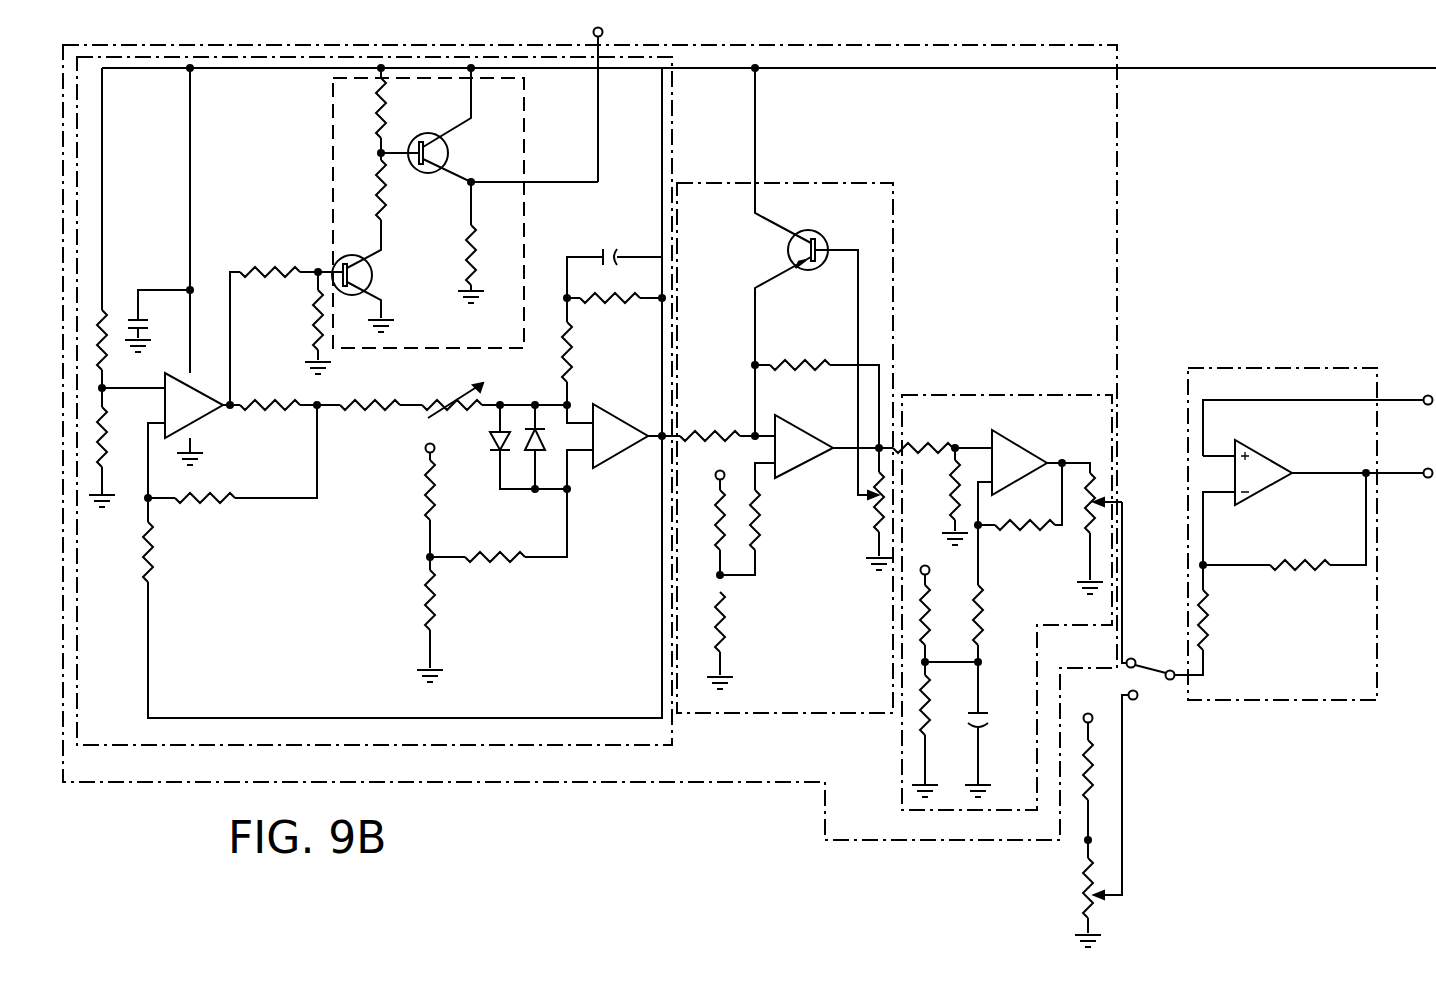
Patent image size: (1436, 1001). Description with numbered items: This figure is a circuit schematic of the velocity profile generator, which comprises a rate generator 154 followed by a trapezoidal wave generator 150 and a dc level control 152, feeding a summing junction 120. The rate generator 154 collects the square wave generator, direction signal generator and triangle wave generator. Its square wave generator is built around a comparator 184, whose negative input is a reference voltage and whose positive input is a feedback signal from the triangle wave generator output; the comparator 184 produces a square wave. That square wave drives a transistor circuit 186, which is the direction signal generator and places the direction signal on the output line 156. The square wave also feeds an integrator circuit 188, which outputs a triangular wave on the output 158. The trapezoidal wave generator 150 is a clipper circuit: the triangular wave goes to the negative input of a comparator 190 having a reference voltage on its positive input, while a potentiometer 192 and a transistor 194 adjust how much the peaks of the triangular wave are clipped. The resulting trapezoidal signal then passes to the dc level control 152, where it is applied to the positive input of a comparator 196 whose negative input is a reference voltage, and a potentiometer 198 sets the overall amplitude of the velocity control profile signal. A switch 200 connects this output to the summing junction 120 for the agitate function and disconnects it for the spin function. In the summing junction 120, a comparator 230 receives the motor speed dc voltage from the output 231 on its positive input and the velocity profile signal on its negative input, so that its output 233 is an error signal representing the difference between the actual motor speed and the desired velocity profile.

The summing junction 120 is at (1280, 368).
The trapezoidal wave generator 150 is at (819, 183).
The dc level control 152 is at (1022, 395).
The rate generator 154 is at (465, 745).
The output line 156 is at (606, 31).
The output 158 is at (674, 429).
The comparator 184 is at (202, 386).
The transistor circuit 186 is at (333, 147).
The integrator circuit 188 is at (638, 364).
The comparator 190 is at (805, 426).
The potentiometer 192 is at (870, 502).
The transistor 194 is at (815, 233).
The comparator 196 is at (1030, 445).
The potentiometer 198 is at (1082, 521).
The switch 200 is at (1158, 696).
The comparator 230 is at (1274, 461).
The output 231 is at (1425, 394).
The output 233 is at (1424, 480).